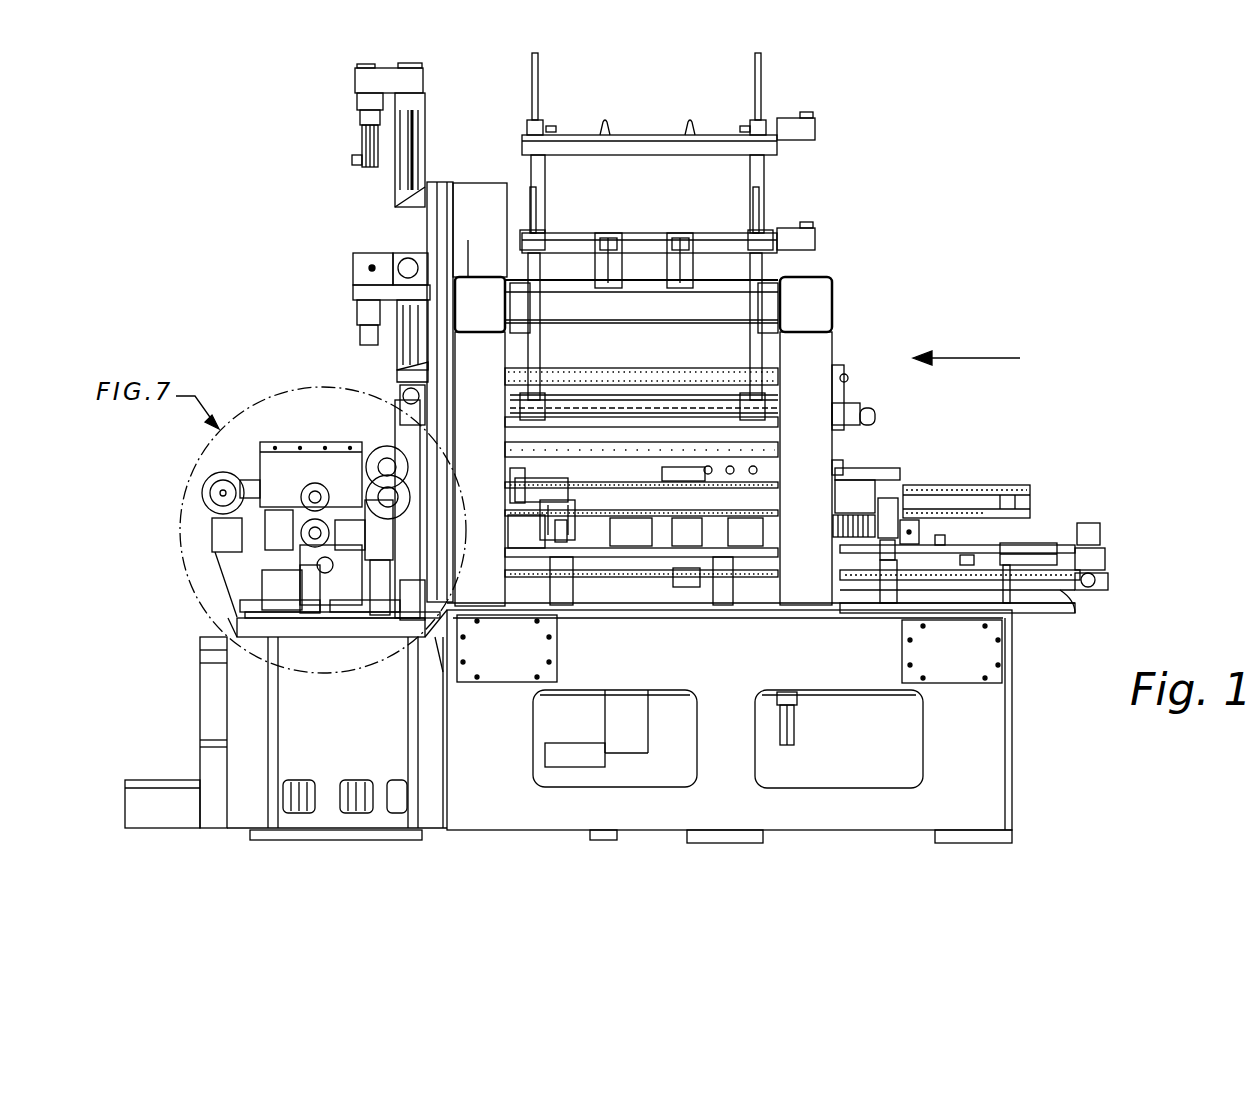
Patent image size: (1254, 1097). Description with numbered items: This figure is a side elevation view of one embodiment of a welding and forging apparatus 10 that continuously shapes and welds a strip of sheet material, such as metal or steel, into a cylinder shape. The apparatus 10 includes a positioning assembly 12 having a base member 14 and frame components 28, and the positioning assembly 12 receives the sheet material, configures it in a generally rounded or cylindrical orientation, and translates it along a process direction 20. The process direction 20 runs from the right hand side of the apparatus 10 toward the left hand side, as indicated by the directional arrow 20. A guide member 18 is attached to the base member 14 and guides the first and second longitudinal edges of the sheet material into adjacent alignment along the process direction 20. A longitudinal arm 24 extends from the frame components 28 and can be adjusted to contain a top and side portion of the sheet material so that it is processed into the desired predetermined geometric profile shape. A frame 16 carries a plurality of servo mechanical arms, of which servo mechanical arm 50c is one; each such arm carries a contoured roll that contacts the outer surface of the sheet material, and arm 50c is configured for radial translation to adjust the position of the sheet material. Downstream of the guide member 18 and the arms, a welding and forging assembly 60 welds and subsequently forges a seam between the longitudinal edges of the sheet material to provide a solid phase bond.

The welding and forging apparatus 10 is at (918, 158).
The positioning assembly 12 is at (1008, 470).
The base member 14 is at (957, 757).
The frame 16 is at (432, 212).
The guide member 18 is at (1030, 500).
The process direction 20 is at (972, 341).
The longitudinal arm 24 is at (648, 368).
The frame components 28 is at (806, 358).
The servo mechanical arm 50c is at (404, 163).
The welding and forging assembly 60 is at (266, 368).